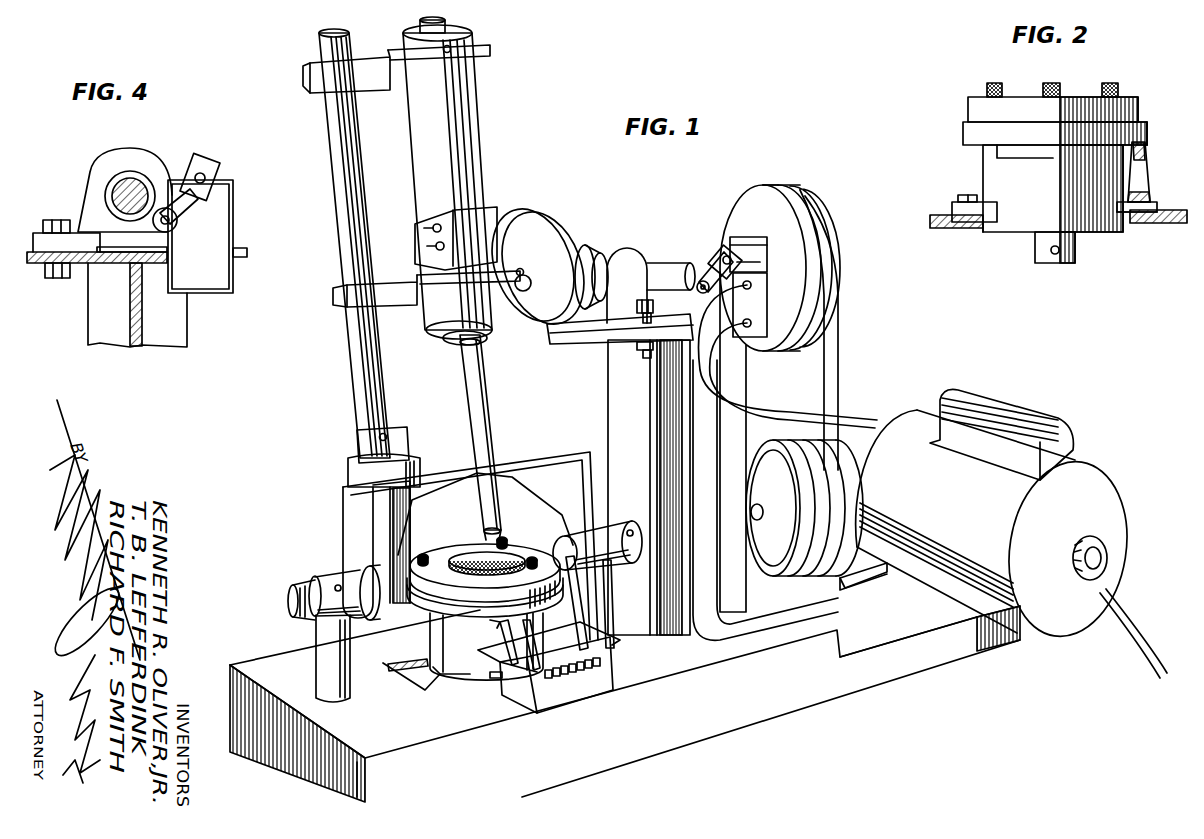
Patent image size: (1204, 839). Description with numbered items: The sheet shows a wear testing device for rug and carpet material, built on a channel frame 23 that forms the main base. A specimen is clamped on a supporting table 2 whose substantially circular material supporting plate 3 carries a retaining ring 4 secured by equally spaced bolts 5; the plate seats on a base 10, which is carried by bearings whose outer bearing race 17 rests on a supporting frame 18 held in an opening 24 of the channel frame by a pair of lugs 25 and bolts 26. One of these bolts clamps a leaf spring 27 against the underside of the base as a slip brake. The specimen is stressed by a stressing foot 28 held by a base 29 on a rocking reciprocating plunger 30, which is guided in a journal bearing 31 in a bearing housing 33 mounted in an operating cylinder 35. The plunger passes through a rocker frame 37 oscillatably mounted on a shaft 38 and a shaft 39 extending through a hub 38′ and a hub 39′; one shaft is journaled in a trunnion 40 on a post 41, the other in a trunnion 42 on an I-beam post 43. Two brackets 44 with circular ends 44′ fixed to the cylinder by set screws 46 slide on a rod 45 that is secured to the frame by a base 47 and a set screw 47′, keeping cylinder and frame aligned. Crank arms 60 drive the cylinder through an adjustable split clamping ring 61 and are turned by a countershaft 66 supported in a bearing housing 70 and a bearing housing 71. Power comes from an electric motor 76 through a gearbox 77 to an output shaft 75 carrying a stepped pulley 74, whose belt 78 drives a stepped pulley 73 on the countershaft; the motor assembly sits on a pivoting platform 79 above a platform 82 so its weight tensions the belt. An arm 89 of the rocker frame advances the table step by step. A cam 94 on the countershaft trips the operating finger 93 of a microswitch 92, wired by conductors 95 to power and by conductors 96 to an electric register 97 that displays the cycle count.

In FIG. 1, the supporting table 2 is at (418, 614).
In FIG. 2, the material supporting plate 3 is at (1133, 114).
In FIG. 1, the material supporting plate 3 is at (412, 572).
In FIG. 2, the retaining ring 4 is at (1128, 97).
In FIG. 1, the retaining ring 4 is at (458, 553).
In FIG. 2, the bolts 5 is at (1108, 85).
In FIG. 1, the bolts 5 is at (424, 554).
In FIG. 2, the base 10 is at (1147, 128).
In FIG. 1, the base 10 is at (620, 640).
In FIG. 2, the outer bearing race 17 is at (1000, 150).
In FIG. 1, the outer bearing race 17 is at (465, 622).
In FIG. 2, the supporting frame 18 is at (1088, 224).
In FIG. 1, the supporting frame 18 is at (442, 674).
In FIG. 2, the channel frame 23 is at (1178, 224).
In FIG. 1, the channel frame 23 is at (327, 745).
In FIG. 2, the opening 24 is at (982, 228).
In FIG. 1, the opening 24 is at (405, 674).
In FIG. 2, the lugs 25 is at (1143, 213).
In FIG. 1, the lugs 25 is at (412, 651).
In FIG. 2, the bolts 26 is at (958, 199).
In FIG. 2, the leaf spring 27 is at (1138, 167).
In FIG. 1, the leaf spring 27 is at (500, 650).
In FIG. 1, the stressing foot 28 is at (498, 524).
In FIG. 1, the base 29 is at (487, 517).
In FIG. 1, the plunger 30 is at (476, 411).
In FIG. 1, the journal bearing 31 is at (460, 346).
In FIG. 1, the bearing housing 33 is at (450, 340).
In FIG. 1, the operating cylinder 35 is at (422, 118).
In FIG. 1, the rocker frame 37 is at (357, 515).
In FIG. 1, the shaft 38 is at (290, 601).
In FIG. 1, the hub 38′ is at (363, 573).
In FIG. 1, the shaft 39 is at (605, 560).
In FIG. 1, the hub 39′ is at (502, 560).
In FIG. 1, the trunnion 40 is at (322, 582).
In FIG. 1, the post 41 is at (316, 634).
In FIG. 1, the trunnion 42 is at (612, 520).
In FIG. 4, the I-beam post 43 is at (88, 326).
In FIG. 1, the I-beam post 43 is at (608, 417).
In FIG. 1, the brackets 44 is at (377, 55).
In FIG. 1, the circular ends 44′ is at (480, 58).
In FIG. 1, the rod 45 is at (335, 169).
In FIG. 1, the set screws 46 is at (452, 48).
In FIG. 1, the base 47 is at (372, 453).
In FIG. 1, the set screw 47′ is at (380, 437).
In FIG. 1, the crank arms 60 is at (542, 216).
In FIG. 1, the split clamping ring 61 is at (470, 218).
In FIG. 1, the countershaft 66 is at (650, 262).
In FIG. 1, the bearing housing 70 is at (603, 255).
In FIG. 1, the bearing housing 71 is at (725, 243).
In FIG. 1, the stepped pulley 73 is at (798, 197).
In FIG. 1, the stepped pulley 74 is at (817, 586).
In FIG. 1, the gearbox output shaft 75 is at (759, 504).
In FIG. 1, the electric motor 76 is at (1088, 477).
In FIG. 1, the gearbox 77 is at (832, 413).
In FIG. 1, the belt 78 is at (838, 357).
In FIG. 1, the platform 79 is at (860, 578).
In FIG. 1, the platform 82 is at (883, 633).
In FIG. 1, the arm 89 is at (607, 608).
In FIG. 4, the microswitch 92 is at (222, 210).
In FIG. 1, the microswitch 92 is at (762, 272).
In FIG. 4, the operating finger 93 is at (187, 207).
In FIG. 1, the operating finger 93 is at (702, 256).
In FIG. 4, the cam 94 is at (160, 172).
In FIG. 1, the conductors 95 is at (757, 397).
In FIG. 1, the conductors 96 is at (742, 629).
In FIG. 1, the electric register 97 is at (560, 706).